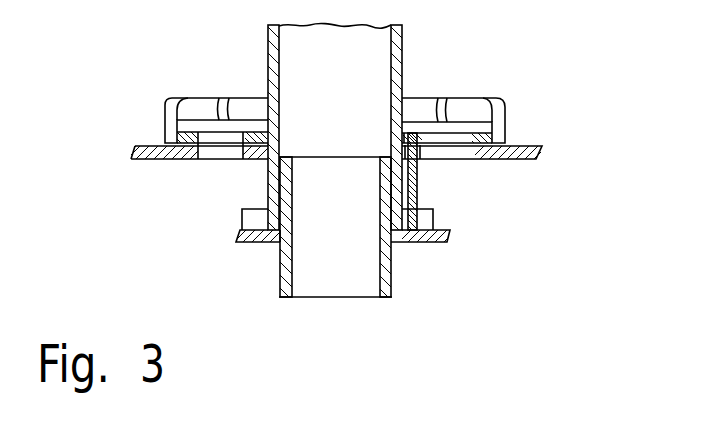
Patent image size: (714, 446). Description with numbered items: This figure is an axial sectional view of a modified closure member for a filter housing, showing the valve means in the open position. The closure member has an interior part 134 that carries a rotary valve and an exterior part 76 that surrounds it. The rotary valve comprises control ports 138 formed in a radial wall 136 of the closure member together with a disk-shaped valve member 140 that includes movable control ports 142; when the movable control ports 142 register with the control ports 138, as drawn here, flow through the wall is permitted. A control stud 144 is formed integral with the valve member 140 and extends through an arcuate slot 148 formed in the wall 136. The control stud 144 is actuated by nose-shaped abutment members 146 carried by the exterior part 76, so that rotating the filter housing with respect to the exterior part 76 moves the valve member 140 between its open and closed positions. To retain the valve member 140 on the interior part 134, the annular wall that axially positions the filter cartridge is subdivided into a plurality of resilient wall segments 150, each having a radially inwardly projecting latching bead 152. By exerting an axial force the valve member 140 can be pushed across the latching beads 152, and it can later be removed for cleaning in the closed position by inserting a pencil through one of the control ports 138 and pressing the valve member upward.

The exterior part 76 is at (404, 278).
The interior part 134 is at (155, 231).
The radial wall 136 is at (168, 152).
The control ports 138 is at (202, 149).
The disk-shaped valve member 140 is at (414, 126).
The movable control ports 142 is at (462, 109).
The control stud 144 is at (421, 191).
The nose-shaped abutment members 146 is at (433, 213).
The arcuate slot 148 is at (417, 168).
The resilient wall segments 150 is at (505, 108).
The latching bead 152 is at (197, 99).